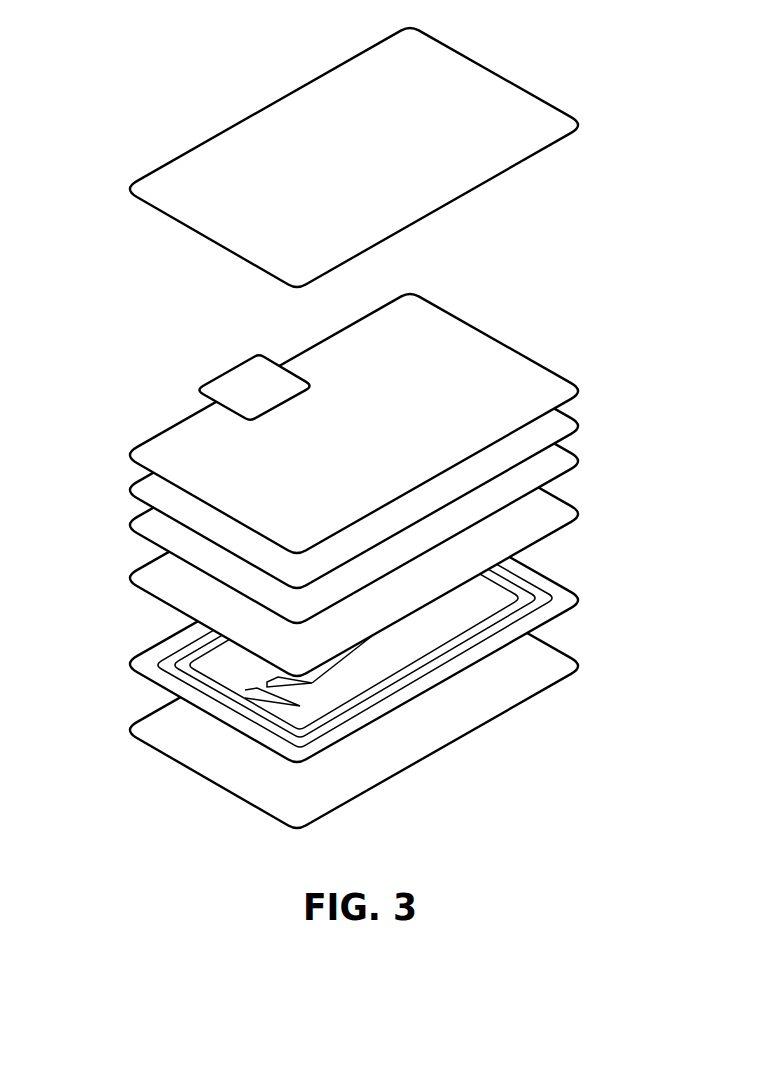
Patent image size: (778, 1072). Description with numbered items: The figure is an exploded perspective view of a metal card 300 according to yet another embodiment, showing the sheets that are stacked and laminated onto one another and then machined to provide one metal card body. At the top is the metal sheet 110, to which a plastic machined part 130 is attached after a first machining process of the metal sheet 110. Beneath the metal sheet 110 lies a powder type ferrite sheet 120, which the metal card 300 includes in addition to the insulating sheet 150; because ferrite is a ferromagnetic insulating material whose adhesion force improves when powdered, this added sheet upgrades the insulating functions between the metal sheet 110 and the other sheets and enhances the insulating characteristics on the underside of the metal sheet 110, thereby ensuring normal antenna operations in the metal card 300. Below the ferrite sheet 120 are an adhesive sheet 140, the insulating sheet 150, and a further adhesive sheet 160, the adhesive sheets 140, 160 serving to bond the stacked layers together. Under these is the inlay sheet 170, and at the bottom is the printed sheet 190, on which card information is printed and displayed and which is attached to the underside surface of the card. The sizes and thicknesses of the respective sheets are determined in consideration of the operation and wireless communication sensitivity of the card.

The metal card 300 is at (131, 77).
The metal sheet 110 is at (580, 126).
The powder type ferrite sheet 120 is at (580, 391).
The plastic machined part 130 is at (200, 390).
The adhesive sheet 140 is at (580, 426).
The insulating sheet 150 is at (580, 461).
The adhesive sheet 160 is at (580, 514).
The inlay sheet 170 is at (580, 599).
The printed sheet 190 is at (580, 666).